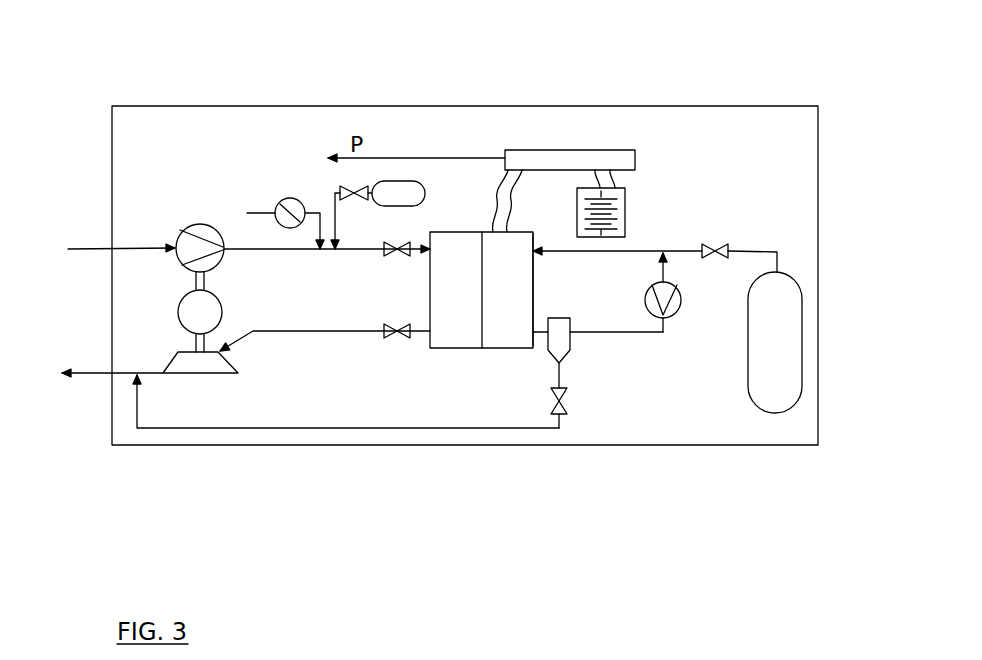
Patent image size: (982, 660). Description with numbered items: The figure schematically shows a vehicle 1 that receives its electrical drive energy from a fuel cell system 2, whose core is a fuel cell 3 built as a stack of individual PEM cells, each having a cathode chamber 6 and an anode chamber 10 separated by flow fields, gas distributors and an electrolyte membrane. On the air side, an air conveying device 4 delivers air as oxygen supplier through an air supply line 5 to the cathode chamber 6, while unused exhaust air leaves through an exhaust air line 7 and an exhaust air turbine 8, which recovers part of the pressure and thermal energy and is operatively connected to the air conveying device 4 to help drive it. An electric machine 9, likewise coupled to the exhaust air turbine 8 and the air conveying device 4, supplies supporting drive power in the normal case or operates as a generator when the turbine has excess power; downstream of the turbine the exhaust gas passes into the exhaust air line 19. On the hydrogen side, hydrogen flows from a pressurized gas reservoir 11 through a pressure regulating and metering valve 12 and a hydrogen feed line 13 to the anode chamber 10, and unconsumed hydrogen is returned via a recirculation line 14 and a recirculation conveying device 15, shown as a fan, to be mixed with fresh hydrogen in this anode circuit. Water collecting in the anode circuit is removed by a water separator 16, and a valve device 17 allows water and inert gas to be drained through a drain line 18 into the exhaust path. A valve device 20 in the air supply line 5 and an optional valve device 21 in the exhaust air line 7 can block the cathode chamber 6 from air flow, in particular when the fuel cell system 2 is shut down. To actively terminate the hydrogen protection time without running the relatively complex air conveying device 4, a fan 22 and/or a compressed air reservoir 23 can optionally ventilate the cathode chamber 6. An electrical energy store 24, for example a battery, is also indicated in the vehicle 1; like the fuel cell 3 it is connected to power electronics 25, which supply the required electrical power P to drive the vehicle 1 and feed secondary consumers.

The vehicle 1 is at (127, 445).
The fuel cell system 2 is at (670, 111).
The fuel cell 3 is at (522, 201).
The air conveying device 4 is at (182, 230).
The air supply line 5 is at (247, 246).
The cathode chamber 6 is at (455, 248).
The exhaust air line 7 is at (320, 332).
The exhaust air turbine 8 is at (197, 368).
The electric machine 9 is at (193, 308).
The anode chamber 10 is at (513, 252).
The pressurized gas reservoir 11 is at (780, 317).
The pressure regulating and metering valve 12 is at (728, 251).
The hydrogen feed line 13 is at (638, 251).
The recirculation line 14 is at (627, 332).
The recirculation conveying device 15 is at (665, 307).
The water separator 16 is at (562, 352).
The valve device 17 is at (553, 410).
The drain line 18 is at (443, 428).
The exhaust air line 19 is at (95, 373).
The valve device 20 is at (399, 247).
The valve device 21 is at (397, 338).
The fan 22 is at (291, 213).
The compressed air reservoir 23 is at (388, 192).
The electrical energy store 24 is at (615, 193).
The power electronics 25 is at (537, 158).